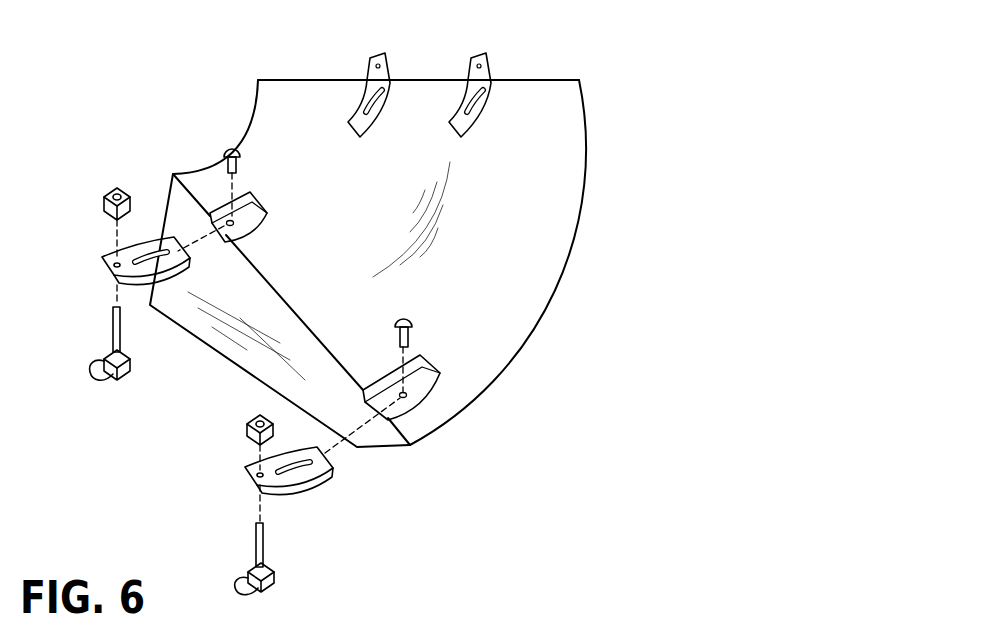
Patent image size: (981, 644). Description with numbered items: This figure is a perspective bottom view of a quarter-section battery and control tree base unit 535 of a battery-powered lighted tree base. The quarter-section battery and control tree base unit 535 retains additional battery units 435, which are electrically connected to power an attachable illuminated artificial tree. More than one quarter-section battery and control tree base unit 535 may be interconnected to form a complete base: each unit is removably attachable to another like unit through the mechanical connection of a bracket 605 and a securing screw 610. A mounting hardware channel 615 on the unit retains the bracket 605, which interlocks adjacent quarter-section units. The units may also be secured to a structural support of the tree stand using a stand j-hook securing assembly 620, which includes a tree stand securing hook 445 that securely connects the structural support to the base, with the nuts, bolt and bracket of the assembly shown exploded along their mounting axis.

The quarter-section battery and control tree base unit 535 is at (651, 65).
The additional battery unit 435 is at (586, 163).
The bracket 605 is at (479, 56).
The securing screw 610 is at (404, 318).
The mounting hardware channel 615 is at (427, 363).
The stand j-hook securing assembly 620 is at (261, 505).
The tree stand securing hook 445 is at (302, 553).